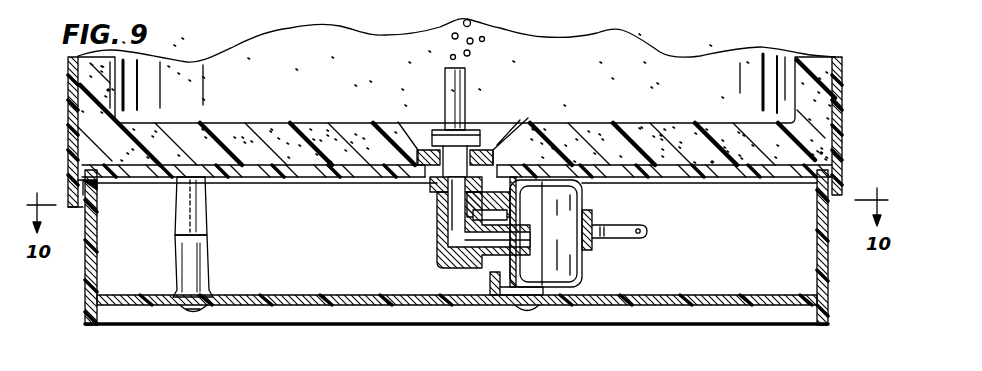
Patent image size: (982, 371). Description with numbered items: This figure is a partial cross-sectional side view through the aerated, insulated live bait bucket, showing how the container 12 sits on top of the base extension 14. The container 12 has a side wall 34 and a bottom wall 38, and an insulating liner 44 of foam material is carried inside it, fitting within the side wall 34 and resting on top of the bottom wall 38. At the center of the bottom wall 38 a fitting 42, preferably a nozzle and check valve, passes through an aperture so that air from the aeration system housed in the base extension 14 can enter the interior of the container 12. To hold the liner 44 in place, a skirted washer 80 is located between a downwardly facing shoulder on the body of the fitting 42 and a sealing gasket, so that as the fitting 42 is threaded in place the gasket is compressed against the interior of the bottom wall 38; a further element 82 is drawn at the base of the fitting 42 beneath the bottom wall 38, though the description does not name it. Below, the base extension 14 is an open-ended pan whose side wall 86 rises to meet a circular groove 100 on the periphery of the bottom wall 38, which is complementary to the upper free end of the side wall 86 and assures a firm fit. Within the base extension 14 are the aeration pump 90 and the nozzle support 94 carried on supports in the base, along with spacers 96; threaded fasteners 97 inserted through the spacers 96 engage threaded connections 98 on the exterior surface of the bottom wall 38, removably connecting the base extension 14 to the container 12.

The container 12 is at (843, 89).
The base extension 14 is at (832, 283).
The side wall 34 is at (839, 134).
The bottom wall 38 is at (742, 162).
The fitting 42 is at (466, 92).
The insulating liner 44 is at (110, 83).
The skirted washer 80 is at (497, 135).
The collar 82 is at (432, 185).
The side wall 86 is at (90, 277).
The aeration pump 90 is at (586, 259).
The nozzle support 94 is at (477, 262).
The spacers 96 is at (205, 268).
The threaded fasteners 97 is at (207, 307).
The threaded connections 98 is at (205, 213).
The circular groove 100 is at (95, 190).